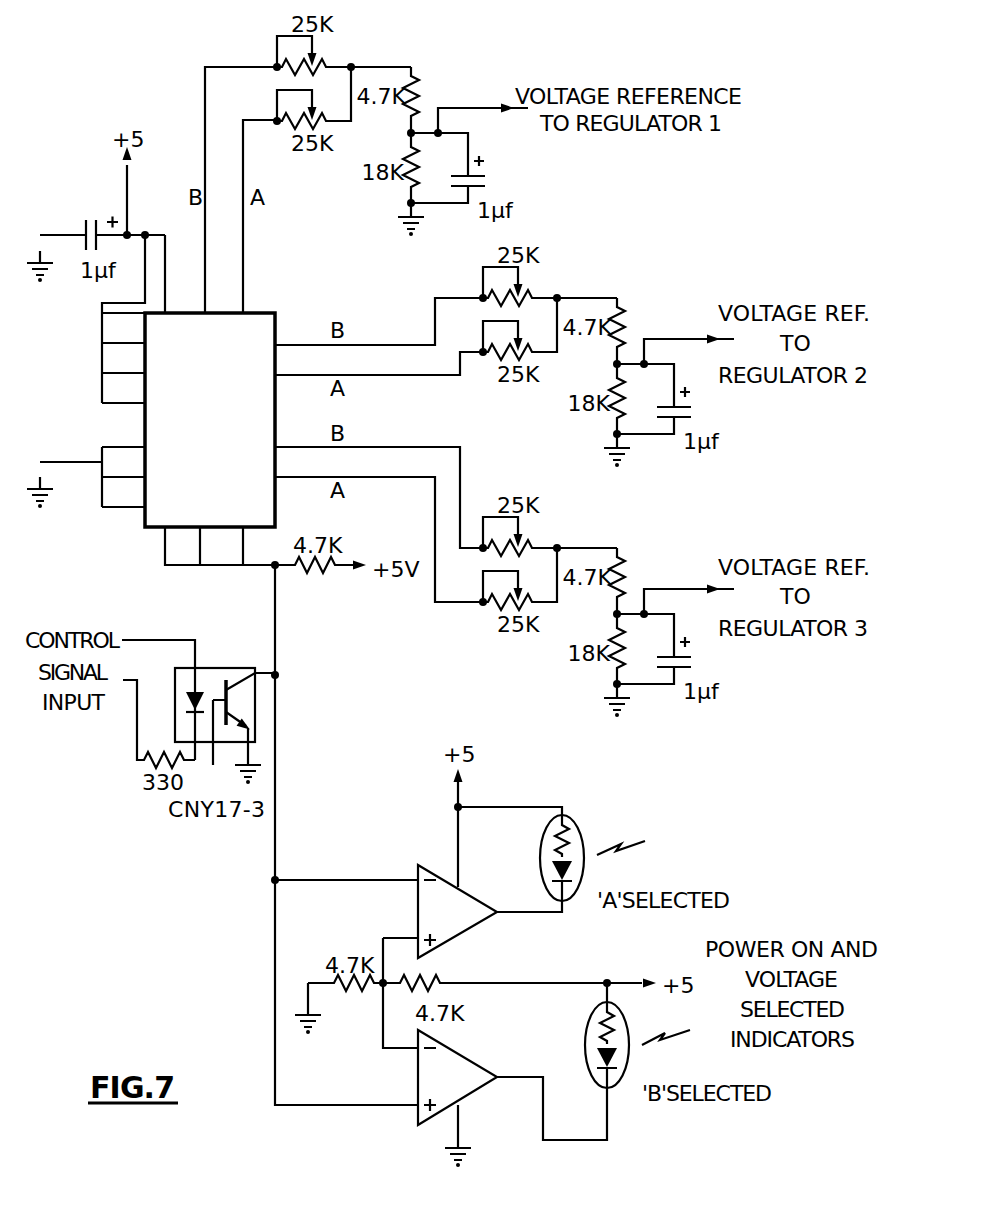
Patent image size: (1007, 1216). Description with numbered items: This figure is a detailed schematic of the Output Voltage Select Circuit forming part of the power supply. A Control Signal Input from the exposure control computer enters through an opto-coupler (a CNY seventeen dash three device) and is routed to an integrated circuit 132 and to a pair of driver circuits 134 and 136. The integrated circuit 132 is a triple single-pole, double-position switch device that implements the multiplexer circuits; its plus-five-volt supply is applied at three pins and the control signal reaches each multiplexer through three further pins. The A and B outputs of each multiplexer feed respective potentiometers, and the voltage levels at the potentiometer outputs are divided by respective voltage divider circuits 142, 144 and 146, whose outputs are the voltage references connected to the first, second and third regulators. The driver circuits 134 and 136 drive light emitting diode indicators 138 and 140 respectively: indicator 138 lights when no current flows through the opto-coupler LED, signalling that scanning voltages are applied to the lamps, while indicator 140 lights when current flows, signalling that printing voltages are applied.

The integrated circuit 132 is at (193, 432).
The driver circuit 134 is at (445, 936).
The driver circuit 136 is at (485, 1088).
The light emitting diode indicator 138 is at (578, 832).
The light emitting diode indicator 140 is at (590, 1016).
The voltage divider circuit 142 is at (420, 58).
The voltage divider circuit 144 is at (628, 290).
The voltage divider circuit 146 is at (628, 540).